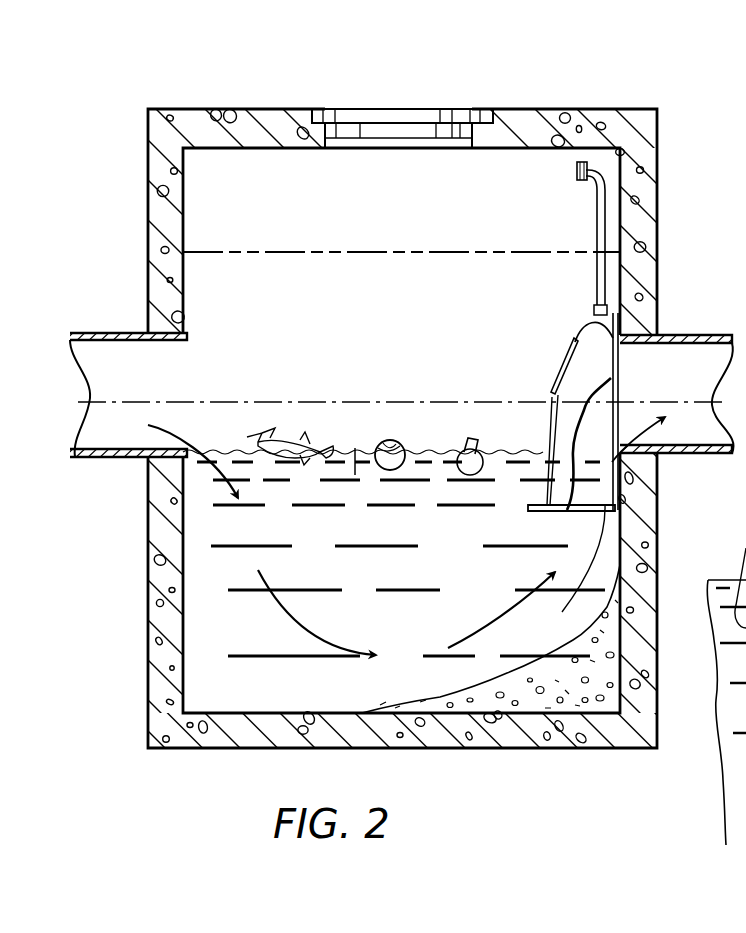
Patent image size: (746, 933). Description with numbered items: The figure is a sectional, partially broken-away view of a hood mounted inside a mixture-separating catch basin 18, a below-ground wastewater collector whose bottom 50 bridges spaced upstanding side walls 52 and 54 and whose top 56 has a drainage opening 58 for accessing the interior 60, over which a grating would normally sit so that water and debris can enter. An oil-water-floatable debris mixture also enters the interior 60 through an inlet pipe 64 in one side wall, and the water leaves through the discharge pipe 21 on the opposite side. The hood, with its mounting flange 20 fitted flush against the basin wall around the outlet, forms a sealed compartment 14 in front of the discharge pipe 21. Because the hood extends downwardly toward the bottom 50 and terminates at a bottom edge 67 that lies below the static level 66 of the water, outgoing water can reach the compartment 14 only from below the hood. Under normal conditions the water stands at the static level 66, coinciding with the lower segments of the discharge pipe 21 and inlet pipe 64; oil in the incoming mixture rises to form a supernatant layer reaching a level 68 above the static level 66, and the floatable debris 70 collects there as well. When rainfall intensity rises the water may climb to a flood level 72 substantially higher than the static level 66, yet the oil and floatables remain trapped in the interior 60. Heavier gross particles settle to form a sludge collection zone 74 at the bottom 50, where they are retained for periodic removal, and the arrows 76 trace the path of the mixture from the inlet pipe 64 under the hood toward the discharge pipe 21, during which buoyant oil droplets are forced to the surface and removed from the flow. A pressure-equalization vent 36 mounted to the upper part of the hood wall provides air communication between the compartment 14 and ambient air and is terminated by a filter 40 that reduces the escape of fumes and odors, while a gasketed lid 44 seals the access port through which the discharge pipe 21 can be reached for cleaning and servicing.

The compartment 14 is at (587, 387).
The catch basin 18 is at (640, 84).
The mounting flange 20 is at (373, 414).
The discharge pipe 21 is at (692, 335).
The pressure-equalization vent 36 is at (597, 285).
The filter 40 is at (576, 174).
The lid 44 is at (556, 364).
The bottom 50 is at (538, 730).
The side wall 52 is at (640, 570).
The side wall 54 is at (170, 604).
The top 56 is at (236, 118).
The drainage opening 58 is at (422, 108).
The interior 60 is at (353, 339).
The inlet pipe 64 is at (110, 333).
The static level 66 is at (355, 470).
The bottom edge 67 is at (528, 508).
The oil level 68 is at (439, 450).
The floatable debris 70 is at (380, 442).
The flood level 72 is at (331, 250).
The sludge collection zone 74 is at (585, 675).
The flow path arrows 76 is at (520, 612).